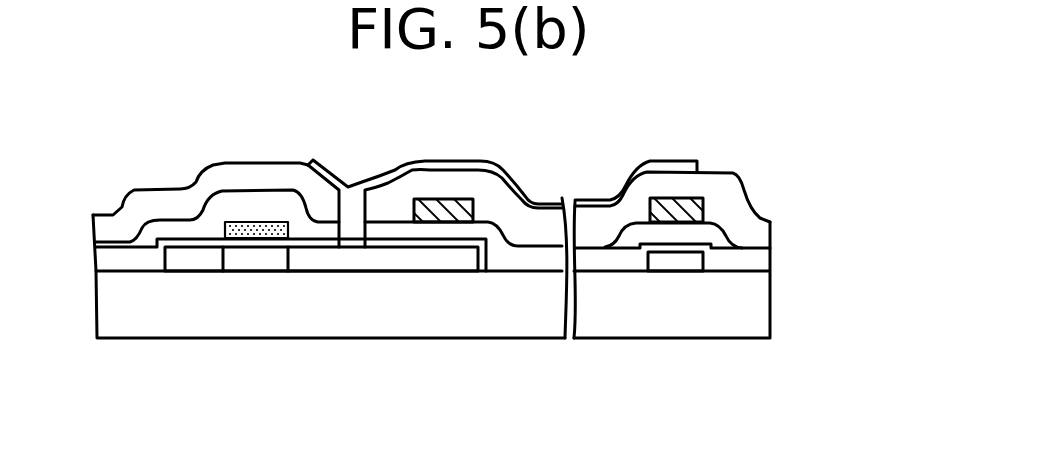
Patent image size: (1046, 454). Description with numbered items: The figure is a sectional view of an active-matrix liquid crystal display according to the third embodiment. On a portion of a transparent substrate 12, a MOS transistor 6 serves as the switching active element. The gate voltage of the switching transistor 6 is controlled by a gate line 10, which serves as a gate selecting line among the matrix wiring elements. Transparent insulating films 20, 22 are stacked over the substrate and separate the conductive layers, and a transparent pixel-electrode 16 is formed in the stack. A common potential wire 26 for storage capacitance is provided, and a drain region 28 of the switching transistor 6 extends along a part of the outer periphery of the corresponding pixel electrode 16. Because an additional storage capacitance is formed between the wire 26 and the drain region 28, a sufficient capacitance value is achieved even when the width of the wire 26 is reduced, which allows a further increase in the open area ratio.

The MOS transistor 6 is at (309, 293).
The gate line 10 is at (266, 221).
The transparent substrate 12 is at (763, 313).
The transparent pixel-electrode 16 is at (433, 160).
The transparent insulating film 20 is at (772, 259).
The transparent insulating film 22 is at (761, 229).
The common potential wire 26 is at (466, 198).
The drain region 28 is at (462, 266).